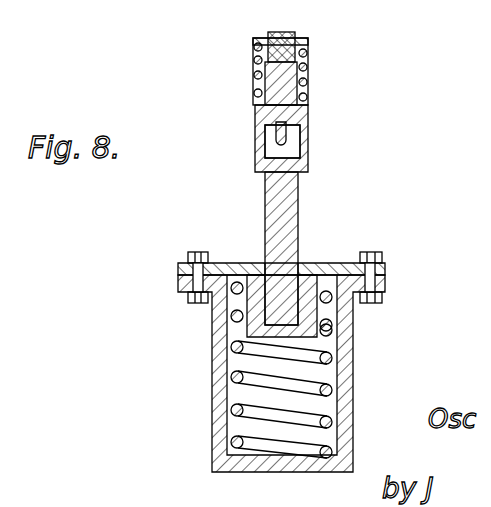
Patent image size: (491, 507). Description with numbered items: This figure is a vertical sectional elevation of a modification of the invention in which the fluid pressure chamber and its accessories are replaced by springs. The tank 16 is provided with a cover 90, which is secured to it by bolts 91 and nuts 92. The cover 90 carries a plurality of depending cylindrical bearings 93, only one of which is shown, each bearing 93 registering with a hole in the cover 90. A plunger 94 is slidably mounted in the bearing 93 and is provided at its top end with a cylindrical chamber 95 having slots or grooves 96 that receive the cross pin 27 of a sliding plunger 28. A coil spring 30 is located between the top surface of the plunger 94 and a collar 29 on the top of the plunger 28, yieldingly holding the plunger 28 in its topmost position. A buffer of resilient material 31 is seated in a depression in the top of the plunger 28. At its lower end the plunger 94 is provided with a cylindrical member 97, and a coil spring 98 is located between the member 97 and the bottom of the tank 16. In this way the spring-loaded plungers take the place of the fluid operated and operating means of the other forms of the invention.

The tank 16 is at (350, 390).
The cross pin 27 is at (310, 107).
The sliding plunger 28 is at (257, 73).
The collar 29 is at (308, 45).
The coil spring 30 is at (253, 98).
The buffer of resilient material 31 is at (290, 28).
The cover 90 is at (230, 262).
The bolts 91 is at (385, 302).
The nuts 92 is at (385, 257).
The cylindrical bearing 93 is at (300, 273).
The plunger 94 is at (300, 210).
The cylindrical chamber 95 is at (300, 150).
The slots or grooves 96 is at (270, 138).
The cylindrical member 97 is at (240, 300).
The coil spring 98 is at (252, 377).